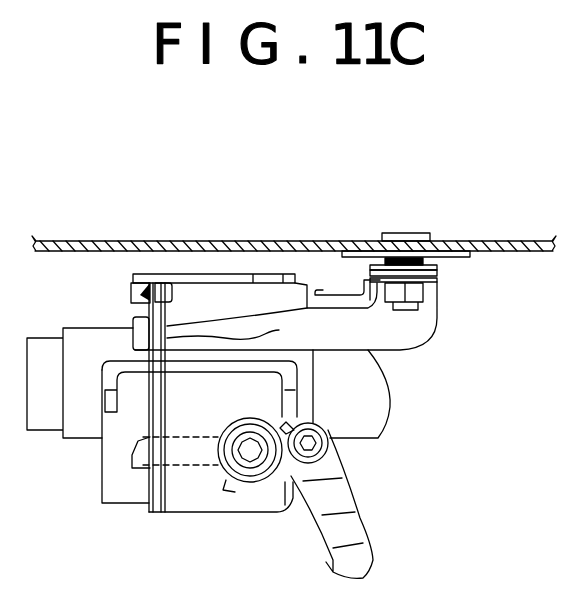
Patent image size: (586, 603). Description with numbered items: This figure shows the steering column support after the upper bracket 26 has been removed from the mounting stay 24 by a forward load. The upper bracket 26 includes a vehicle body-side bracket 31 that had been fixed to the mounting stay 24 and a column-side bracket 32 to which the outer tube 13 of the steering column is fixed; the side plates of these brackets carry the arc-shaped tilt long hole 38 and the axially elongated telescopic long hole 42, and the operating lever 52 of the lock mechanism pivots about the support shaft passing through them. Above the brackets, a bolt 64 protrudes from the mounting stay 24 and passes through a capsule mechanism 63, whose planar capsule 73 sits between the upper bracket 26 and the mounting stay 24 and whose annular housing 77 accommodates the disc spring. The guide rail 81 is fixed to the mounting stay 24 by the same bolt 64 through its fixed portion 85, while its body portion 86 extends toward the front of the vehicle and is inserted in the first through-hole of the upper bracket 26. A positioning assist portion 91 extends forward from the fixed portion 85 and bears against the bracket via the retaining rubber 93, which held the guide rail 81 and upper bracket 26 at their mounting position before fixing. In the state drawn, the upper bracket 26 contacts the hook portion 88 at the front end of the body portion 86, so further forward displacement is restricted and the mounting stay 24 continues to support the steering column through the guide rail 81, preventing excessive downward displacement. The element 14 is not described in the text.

The outer tube 13 is at (383, 412).
The connector block 14 is at (43, 430).
The mounting stay 24 is at (89, 239).
The upper bracket 26 is at (297, 268).
The vehicle body-side bracket 31 is at (313, 376).
The column-side bracket 32 is at (120, 503).
The tilt long hole 38 is at (230, 491).
The telescopic long hole 42 is at (177, 438).
The operating lever 52 is at (360, 522).
The capsule mechanism 63 is at (450, 252).
The bolt 64 is at (399, 233).
The capsule 73 is at (455, 256).
The housing 77 is at (447, 272).
The guide rail 81 is at (423, 339).
The fixed portion 85 is at (424, 300).
The body portion 86 is at (237, 363).
The hook portion 88 is at (133, 318).
The positioning assist portion 91 is at (326, 292).
The retaining rubber 93 is at (237, 359).